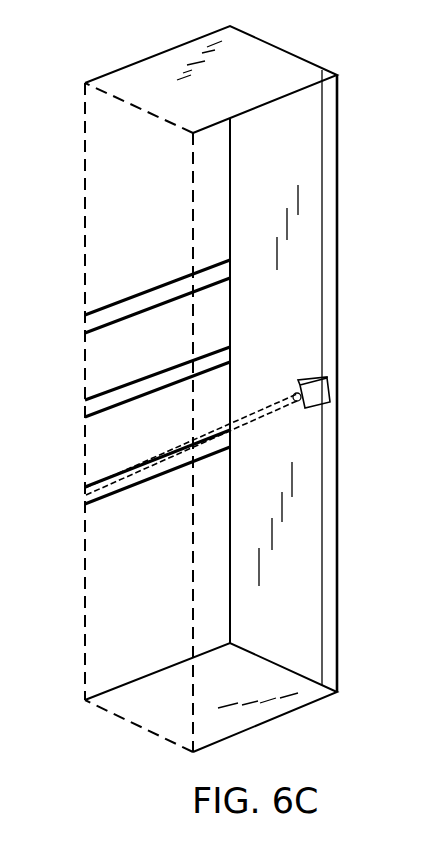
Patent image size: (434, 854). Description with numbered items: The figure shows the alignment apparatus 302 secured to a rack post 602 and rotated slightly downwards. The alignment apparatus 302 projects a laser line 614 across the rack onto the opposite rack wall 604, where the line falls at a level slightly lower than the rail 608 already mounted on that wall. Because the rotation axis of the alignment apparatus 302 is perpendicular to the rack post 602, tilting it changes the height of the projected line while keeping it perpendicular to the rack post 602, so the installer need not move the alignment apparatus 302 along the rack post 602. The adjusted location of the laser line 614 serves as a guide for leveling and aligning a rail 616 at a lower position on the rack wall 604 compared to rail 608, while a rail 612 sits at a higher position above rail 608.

The alignment apparatus 302 is at (330, 383).
The rack post 602 is at (331, 205).
The opposite rack wall 604 is at (212, 162).
The rail 608 is at (90, 408).
The rail 612 is at (90, 324).
The laser line 614 is at (105, 500).
The rail 616 is at (150, 472).